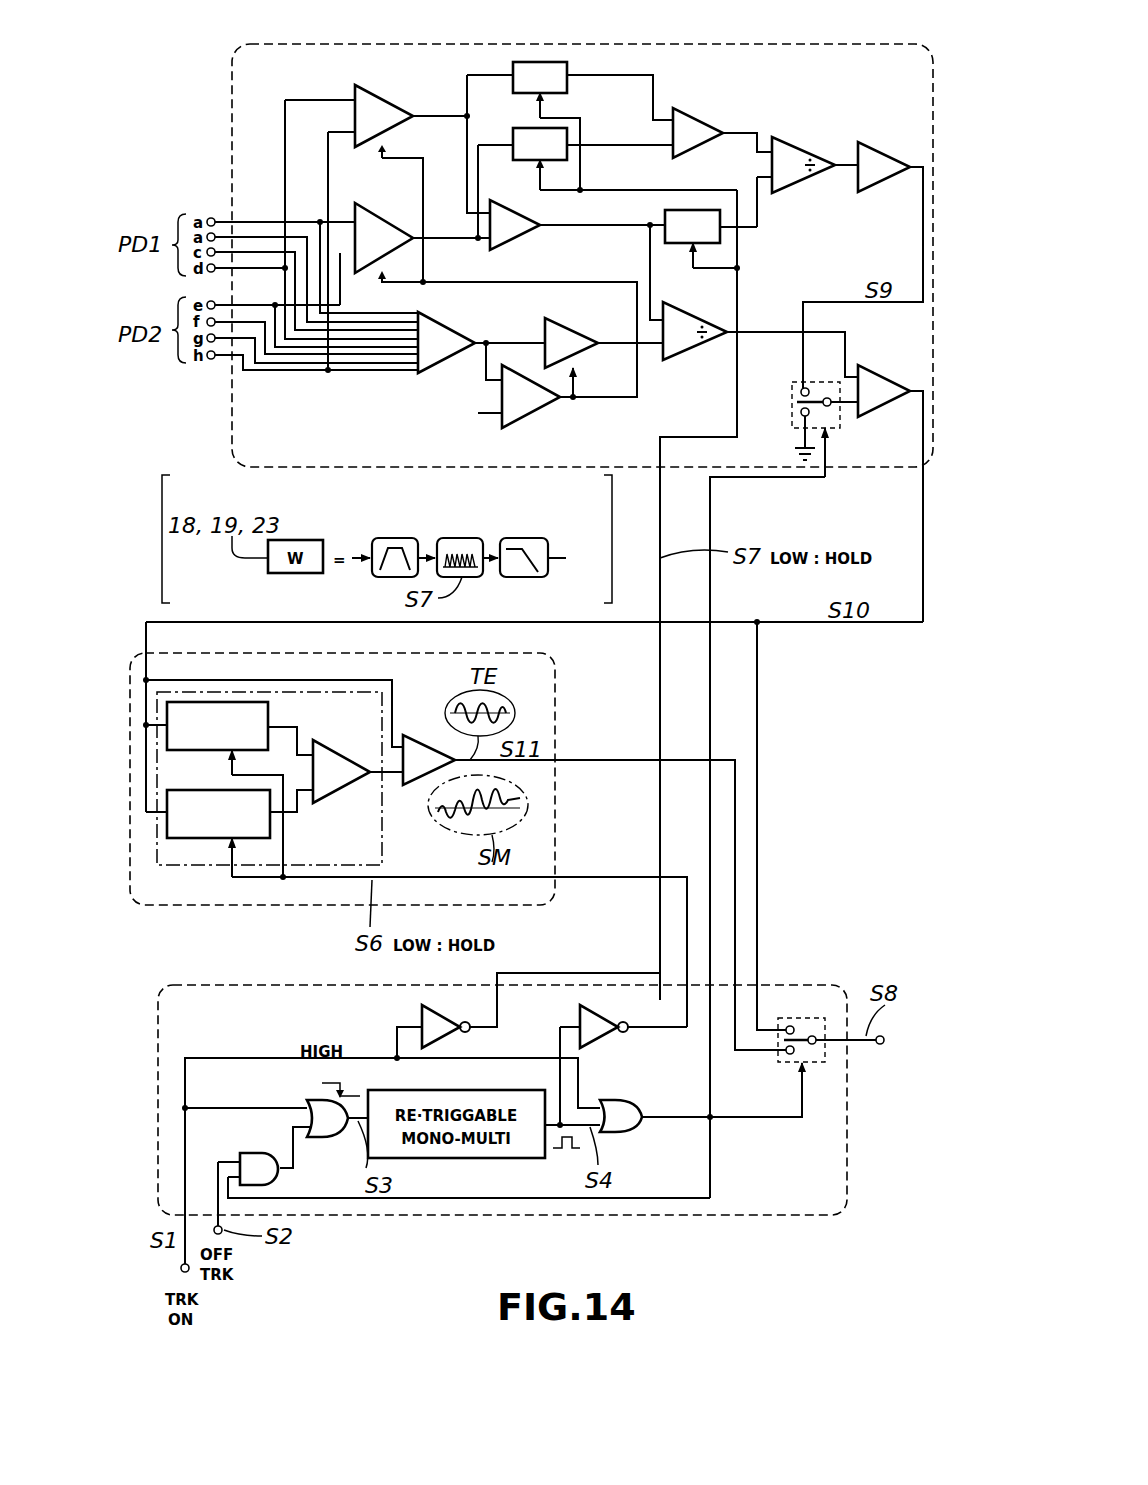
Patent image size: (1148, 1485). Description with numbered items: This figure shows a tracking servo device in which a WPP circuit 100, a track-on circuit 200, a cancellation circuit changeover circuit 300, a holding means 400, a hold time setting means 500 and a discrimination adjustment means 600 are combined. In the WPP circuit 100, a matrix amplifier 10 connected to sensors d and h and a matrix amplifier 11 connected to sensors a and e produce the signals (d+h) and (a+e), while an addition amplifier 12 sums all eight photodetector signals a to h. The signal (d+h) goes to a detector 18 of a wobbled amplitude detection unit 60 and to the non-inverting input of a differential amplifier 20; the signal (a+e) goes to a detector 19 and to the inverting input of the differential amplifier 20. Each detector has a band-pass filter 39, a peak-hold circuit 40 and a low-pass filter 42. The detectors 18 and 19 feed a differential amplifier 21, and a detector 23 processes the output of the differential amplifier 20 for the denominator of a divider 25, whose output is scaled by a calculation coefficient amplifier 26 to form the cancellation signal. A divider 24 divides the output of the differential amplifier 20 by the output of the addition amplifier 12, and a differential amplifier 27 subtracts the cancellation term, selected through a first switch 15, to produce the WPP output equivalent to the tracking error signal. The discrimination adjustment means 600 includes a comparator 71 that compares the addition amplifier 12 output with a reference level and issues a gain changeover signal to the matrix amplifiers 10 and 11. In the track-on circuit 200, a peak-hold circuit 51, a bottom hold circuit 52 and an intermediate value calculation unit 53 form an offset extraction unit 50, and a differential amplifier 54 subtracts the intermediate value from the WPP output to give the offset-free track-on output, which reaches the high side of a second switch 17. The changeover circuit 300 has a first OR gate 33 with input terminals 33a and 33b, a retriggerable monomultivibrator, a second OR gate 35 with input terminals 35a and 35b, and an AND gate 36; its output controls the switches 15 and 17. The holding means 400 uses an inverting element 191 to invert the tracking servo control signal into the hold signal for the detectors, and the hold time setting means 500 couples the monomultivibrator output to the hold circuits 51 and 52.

The WPP circuit 100 is at (216, 102).
The matrix amplifier 10 is at (397, 96).
The matrix amplifier 11 is at (386, 208).
The addition amplifier 12 is at (421, 374).
The detector 18 is at (513, 68).
The detector 19 is at (513, 128).
The differential amplifier 20 is at (510, 200).
The differential amplifier 21 is at (714, 113).
The detector 23 is at (678, 248).
The divider 24 is at (696, 360).
The divider 25 is at (800, 141).
The calculation coefficient amplifier 26 is at (864, 146).
The differential amplifier 27 is at (890, 372).
The first switch 15 is at (835, 432).
The wobbled amplitude detection unit 60 is at (580, 66).
The comparator 71 is at (545, 418).
The discrimination adjustment means 600 is at (383, 404).
The band-pass filter 39 is at (372, 546).
The peak-hold circuit 40 is at (414, 511).
The low-pass filter 42 is at (548, 542).
The unit for extracting an offset of the tracking error signal 50 is at (188, 868).
The peak-hold circuit 51 is at (268, 713).
The bottom hold circuit 52 is at (270, 834).
The intermediate value calculation unit 53 is at (356, 752).
The differential amplifier 54 is at (428, 737).
The track-on circuit 200 is at (306, 907).
The hold time setting means 500 is at (621, 879).
The holding means 400 is at (622, 1000).
The cancellation circuit changeover circuit 300 is at (482, 1220).
The inverting element 191 is at (420, 1012).
The first OR gate 33 is at (314, 1100).
The input terminal of the OR gate 33 33a is at (220, 1108).
The input terminal of the OR gate 33 33b is at (300, 1150).
The second OR gate 35 is at (640, 1130).
The input terminal of the OR gate 35 35a is at (556, 1096).
The input terminal of the OR gate 35 35b is at (578, 1068).
The AND gate 36 is at (255, 1153).
The second switch 17 is at (820, 1065).